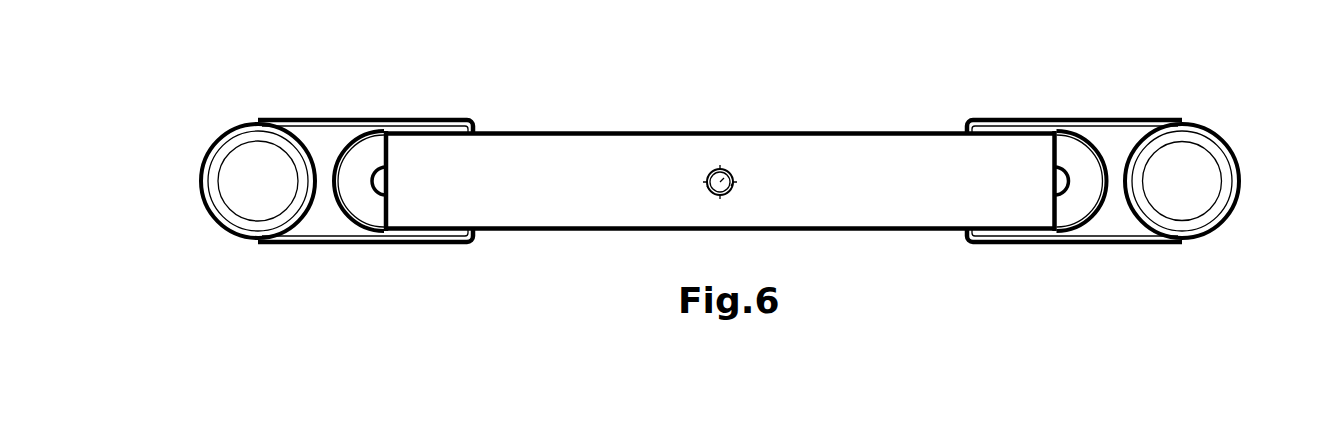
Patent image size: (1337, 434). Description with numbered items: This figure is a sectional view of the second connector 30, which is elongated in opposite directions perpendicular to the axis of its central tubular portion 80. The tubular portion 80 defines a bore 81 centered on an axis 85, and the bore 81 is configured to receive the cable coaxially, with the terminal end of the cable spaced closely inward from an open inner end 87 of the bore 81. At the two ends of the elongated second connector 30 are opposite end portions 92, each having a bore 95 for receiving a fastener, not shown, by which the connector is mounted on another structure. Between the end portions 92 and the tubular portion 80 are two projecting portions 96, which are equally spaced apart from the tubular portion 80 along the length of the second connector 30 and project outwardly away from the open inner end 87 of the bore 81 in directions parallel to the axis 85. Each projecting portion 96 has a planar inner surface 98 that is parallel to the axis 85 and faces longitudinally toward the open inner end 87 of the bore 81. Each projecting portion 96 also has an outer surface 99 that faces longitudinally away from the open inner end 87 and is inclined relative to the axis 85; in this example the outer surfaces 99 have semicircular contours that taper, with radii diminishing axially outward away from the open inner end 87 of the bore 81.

The second connector 30 is at (283, 67).
The tubular portion 80 is at (708, 170).
The bore 81 is at (707, 188).
The axis 85 is at (720, 182).
The open inner end 87 is at (735, 183).
The end portions 92 is at (231, 128).
The bores 95 is at (243, 197).
The projecting portions 96 is at (347, 147).
The planar inner surface 98 is at (390, 153).
The outer surface 99 is at (374, 148).